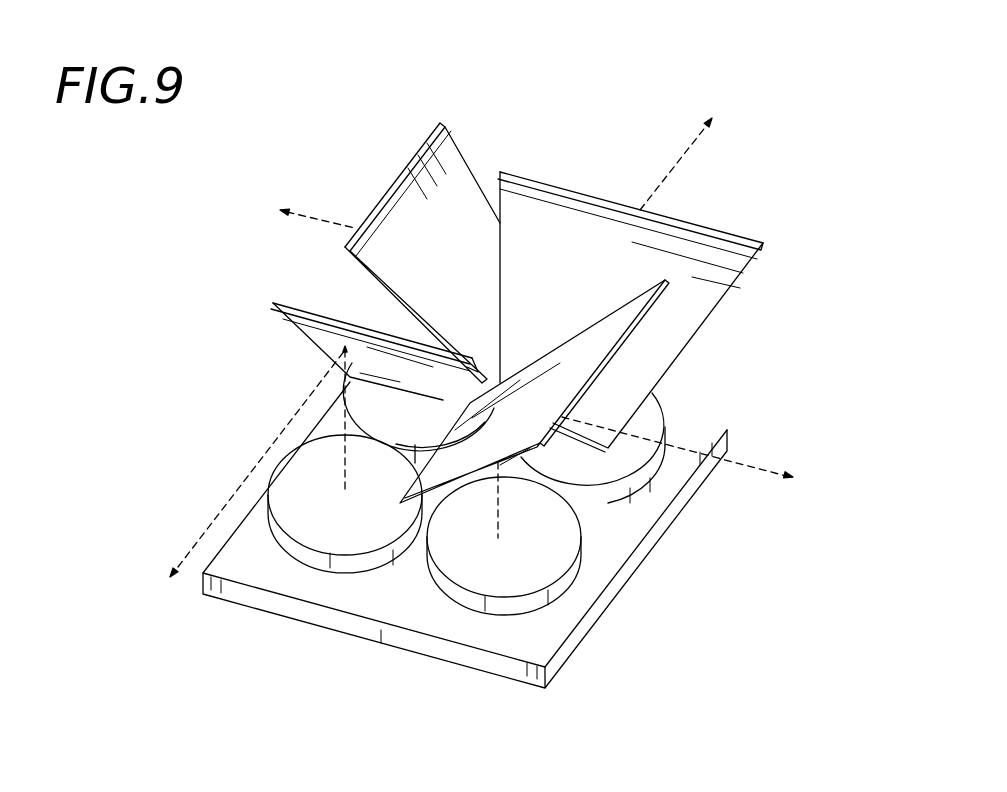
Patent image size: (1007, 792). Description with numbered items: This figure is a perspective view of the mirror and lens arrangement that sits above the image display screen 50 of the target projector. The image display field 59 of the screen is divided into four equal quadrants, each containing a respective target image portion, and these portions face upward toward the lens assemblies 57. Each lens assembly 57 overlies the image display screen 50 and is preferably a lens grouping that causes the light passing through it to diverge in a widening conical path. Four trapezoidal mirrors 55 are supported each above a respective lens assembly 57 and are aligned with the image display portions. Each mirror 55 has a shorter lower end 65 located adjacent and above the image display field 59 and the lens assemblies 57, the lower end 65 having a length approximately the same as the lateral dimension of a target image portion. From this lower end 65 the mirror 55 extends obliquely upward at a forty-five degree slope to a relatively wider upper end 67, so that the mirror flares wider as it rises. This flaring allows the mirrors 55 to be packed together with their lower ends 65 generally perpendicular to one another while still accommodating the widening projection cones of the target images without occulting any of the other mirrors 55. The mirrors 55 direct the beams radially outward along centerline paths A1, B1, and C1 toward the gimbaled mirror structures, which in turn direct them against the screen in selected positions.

The image display screen 50 is at (489, 563).
The mirror 55 is at (420, 192).
The lens assembly 57 is at (345, 380).
The image display field 59 is at (628, 517).
The lower end 65 is at (500, 342).
The upper end 67 is at (437, 180).
The centerline path A1 is at (323, 222).
The centerline path B1 is at (235, 490).
The centerline path C1 is at (665, 182).